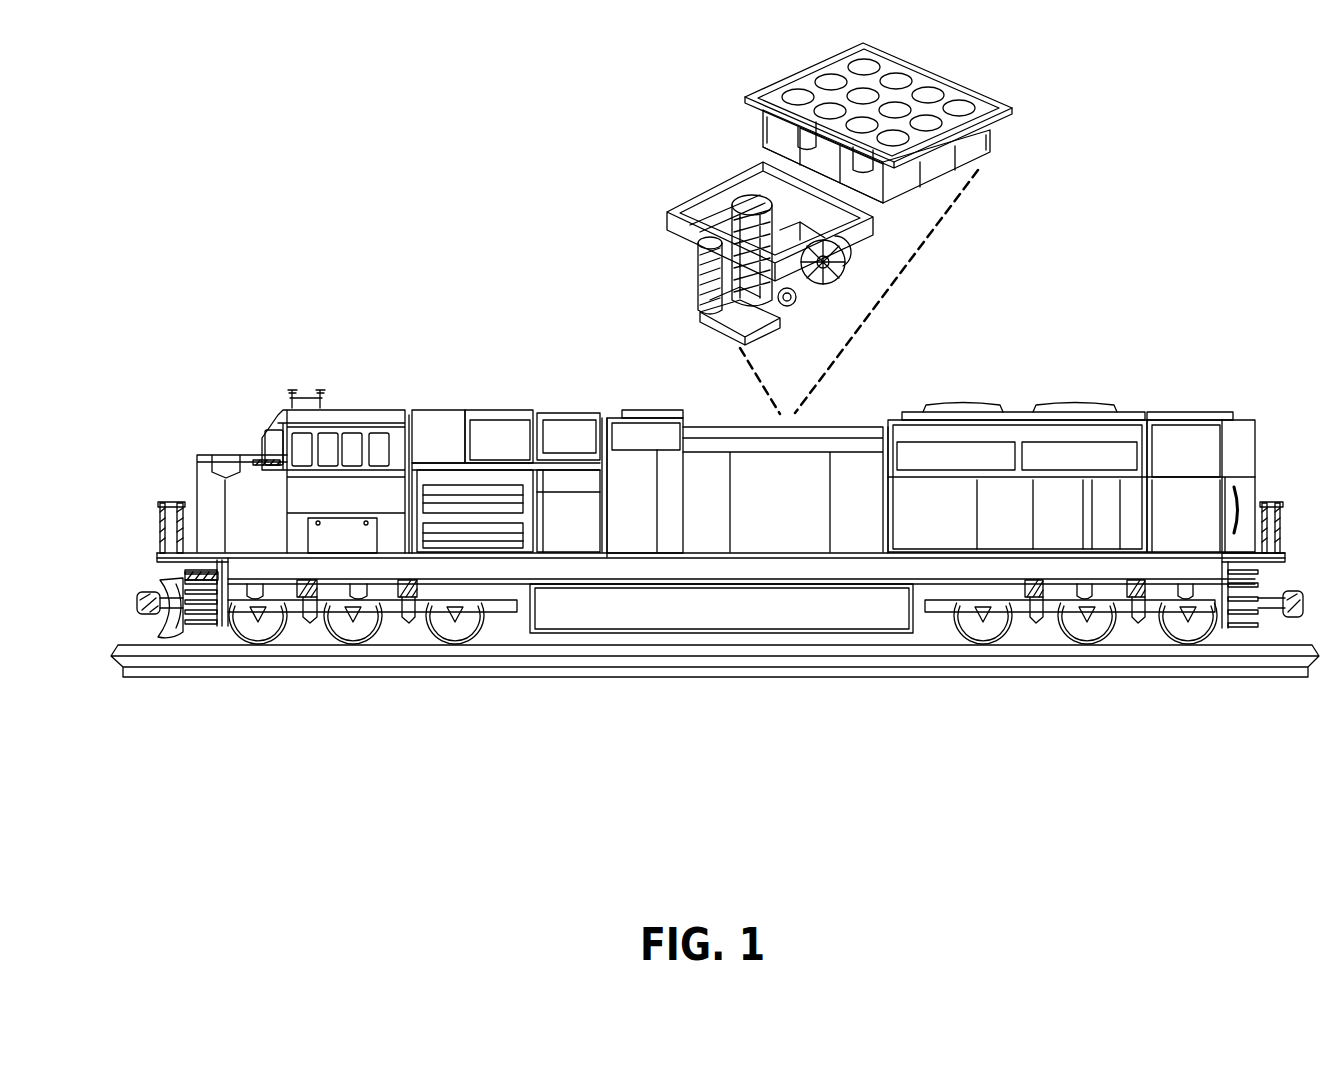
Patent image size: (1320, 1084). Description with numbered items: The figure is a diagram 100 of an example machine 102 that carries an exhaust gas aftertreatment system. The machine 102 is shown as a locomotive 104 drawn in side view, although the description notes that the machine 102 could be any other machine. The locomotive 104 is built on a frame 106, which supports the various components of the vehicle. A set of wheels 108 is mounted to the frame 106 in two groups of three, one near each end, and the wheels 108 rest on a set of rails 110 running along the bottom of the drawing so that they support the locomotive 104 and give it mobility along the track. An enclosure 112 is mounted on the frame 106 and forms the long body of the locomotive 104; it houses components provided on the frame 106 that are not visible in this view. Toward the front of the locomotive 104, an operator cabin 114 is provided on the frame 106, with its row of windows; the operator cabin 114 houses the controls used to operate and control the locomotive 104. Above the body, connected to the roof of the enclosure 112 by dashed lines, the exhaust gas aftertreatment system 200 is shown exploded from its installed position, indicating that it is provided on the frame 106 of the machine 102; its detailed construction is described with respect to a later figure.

The diagram 100 is at (180, 76).
The machine 102 is at (1074, 213).
The locomotive 104 is at (1017, 420).
The frame 106 is at (575, 561).
The set of wheels 108 is at (247, 640).
The set of rails 110 is at (820, 677).
The enclosure 112 is at (708, 498).
The operator cabin 114 is at (346, 434).
The exhaust gas aftertreatment system 200 is at (712, 131).